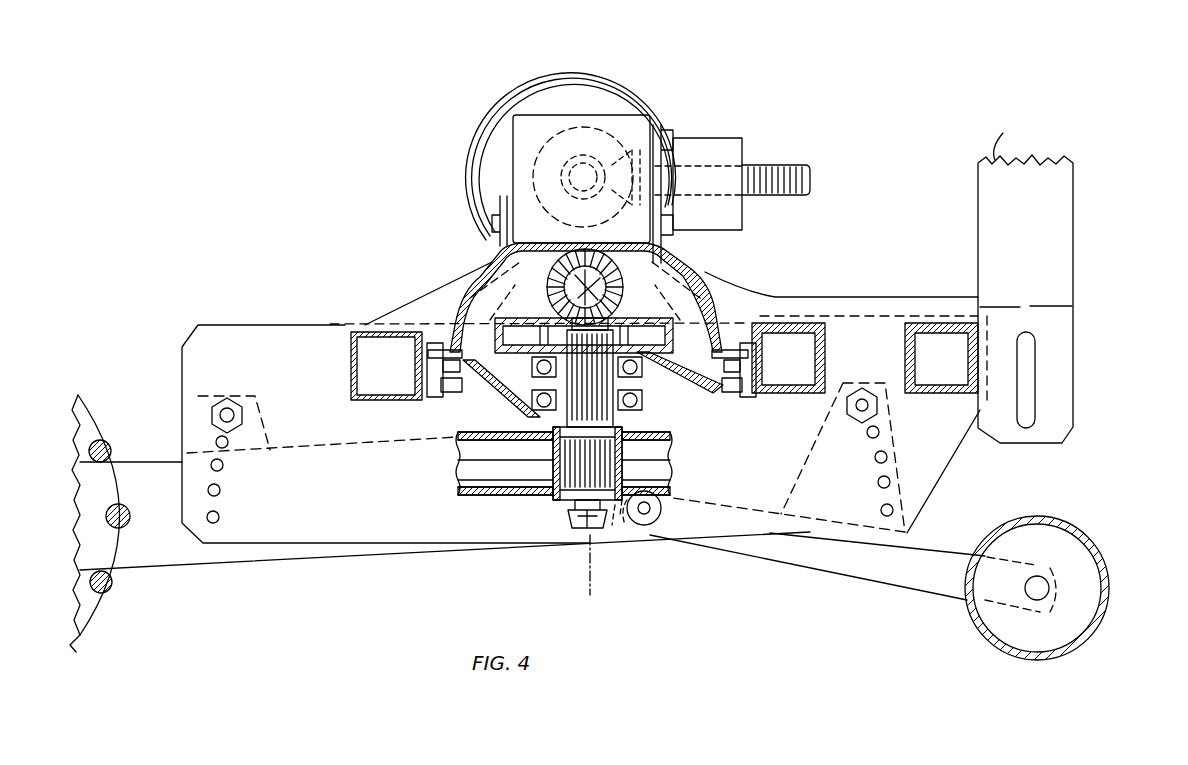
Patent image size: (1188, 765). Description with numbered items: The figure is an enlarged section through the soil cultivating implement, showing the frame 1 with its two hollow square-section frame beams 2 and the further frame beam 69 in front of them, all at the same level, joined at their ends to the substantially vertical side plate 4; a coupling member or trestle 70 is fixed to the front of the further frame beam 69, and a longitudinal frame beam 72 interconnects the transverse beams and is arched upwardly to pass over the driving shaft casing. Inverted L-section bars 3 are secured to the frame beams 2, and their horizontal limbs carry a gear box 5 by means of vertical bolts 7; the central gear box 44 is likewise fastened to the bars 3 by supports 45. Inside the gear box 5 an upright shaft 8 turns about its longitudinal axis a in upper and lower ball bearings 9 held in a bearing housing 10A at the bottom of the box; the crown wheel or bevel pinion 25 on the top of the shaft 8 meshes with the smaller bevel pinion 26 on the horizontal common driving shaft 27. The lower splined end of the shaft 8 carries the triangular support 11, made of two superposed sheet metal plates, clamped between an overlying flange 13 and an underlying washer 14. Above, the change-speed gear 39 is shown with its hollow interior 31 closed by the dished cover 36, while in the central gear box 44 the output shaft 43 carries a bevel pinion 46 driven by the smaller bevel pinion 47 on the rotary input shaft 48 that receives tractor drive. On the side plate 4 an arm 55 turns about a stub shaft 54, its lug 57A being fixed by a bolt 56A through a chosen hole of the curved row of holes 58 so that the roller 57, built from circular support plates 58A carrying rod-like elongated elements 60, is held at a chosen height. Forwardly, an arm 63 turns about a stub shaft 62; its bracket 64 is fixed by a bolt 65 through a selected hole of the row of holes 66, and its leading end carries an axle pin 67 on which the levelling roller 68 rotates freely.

The frame 1 is at (349, 369).
The frame beam 2 is at (372, 330).
The bar 3 is at (430, 396).
The side plate 4 is at (265, 325).
The gear box 5 is at (479, 281).
The bolt 7 is at (446, 386).
The shaft 8 is at (645, 392).
The ball bearing 9 is at (530, 396).
The bearing housing 10A is at (665, 415).
The support 11 is at (458, 455).
The flange 13 is at (520, 448).
The washer 14 is at (555, 506).
The crown wheel or bevel pinion 25 is at (680, 306).
The bevel pinion 26 is at (563, 289).
The shaft 27 is at (612, 289).
The hollow interior 31 is at (612, 100).
The cover 36 is at (520, 95).
The change-speed gear 39 is at (582, 70).
The output shaft 43 is at (530, 166).
The central gear box 44 is at (520, 135).
The support 45 is at (530, 194).
The bevel pinion 46 is at (583, 140).
The bevel pinion 47 is at (606, 156).
The rotary input shaft 48 is at (790, 165).
The stub shaft 54 is at (590, 536).
The longitudinal axis a is at (592, 571).
The arm 55 is at (262, 553).
The bolt 56A is at (229, 406).
The roller 57 is at (120, 601).
The lug 57A is at (272, 441).
The hole 58 is at (220, 490).
The support plate 58A is at (92, 406).
The elongated element 60 is at (110, 446).
The stub shaft 62 is at (662, 502).
The arm 63 is at (772, 556).
The bracket 64 is at (800, 487).
The bolt 65 is at (855, 406).
The hole 66 is at (878, 482).
The axle pin 67 is at (1040, 577).
The roller 68 is at (975, 622).
The further frame beam 69 is at (932, 324).
The coupling member or trestle 70 is at (994, 162).
The frame beam 72 is at (805, 297).